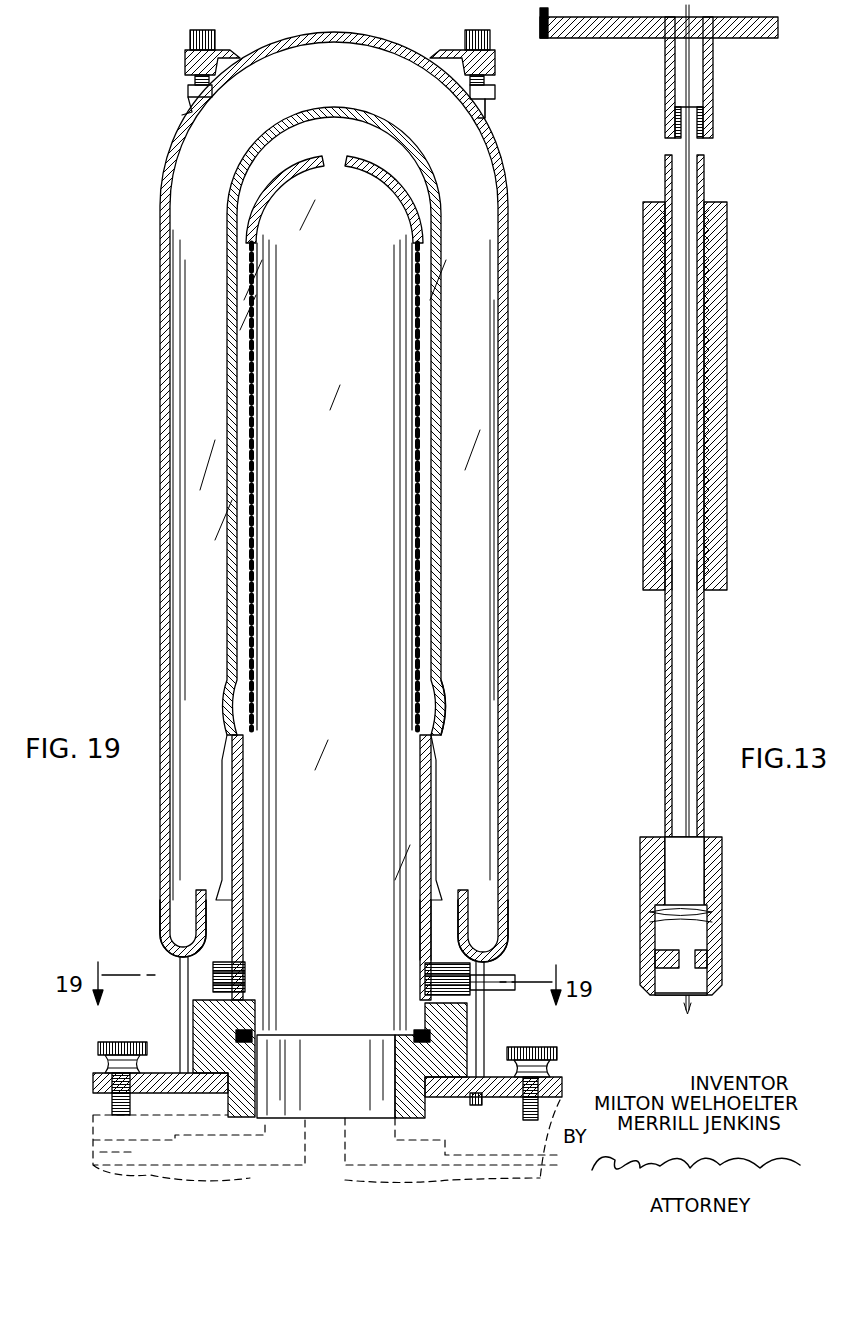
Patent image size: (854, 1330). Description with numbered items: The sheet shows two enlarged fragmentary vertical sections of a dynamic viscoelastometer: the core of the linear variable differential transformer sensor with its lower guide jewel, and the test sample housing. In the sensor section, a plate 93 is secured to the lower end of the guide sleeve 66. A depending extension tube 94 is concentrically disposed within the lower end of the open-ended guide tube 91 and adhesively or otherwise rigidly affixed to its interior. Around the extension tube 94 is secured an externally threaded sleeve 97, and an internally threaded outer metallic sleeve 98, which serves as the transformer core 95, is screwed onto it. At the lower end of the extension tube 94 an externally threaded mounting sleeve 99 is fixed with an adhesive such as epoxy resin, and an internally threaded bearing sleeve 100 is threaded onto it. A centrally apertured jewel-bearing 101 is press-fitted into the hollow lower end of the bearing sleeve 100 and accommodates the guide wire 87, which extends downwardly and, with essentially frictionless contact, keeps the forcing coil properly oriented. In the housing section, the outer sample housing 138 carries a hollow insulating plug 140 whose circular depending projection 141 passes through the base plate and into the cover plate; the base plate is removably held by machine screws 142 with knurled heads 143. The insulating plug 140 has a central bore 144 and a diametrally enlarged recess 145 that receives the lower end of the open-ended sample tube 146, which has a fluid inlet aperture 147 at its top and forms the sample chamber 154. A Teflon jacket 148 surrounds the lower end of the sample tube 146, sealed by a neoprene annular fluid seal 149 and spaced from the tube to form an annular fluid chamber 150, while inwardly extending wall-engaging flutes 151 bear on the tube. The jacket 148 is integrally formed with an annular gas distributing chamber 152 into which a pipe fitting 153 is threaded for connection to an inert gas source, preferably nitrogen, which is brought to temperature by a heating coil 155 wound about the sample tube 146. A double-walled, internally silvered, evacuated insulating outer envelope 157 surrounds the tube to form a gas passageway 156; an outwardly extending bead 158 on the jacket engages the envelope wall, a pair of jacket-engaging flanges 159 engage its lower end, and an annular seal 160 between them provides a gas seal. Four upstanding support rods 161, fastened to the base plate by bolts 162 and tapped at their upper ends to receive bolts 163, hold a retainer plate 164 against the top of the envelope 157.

In FIG. 13, the guide sleeve 66 is at (535, 28).
In FIG. 13, the guide wire 87 is at (688, 682).
In FIG. 13, the guide tube 91 is at (713, 85).
In FIG. 13, the plate 93 is at (600, 36).
In FIG. 13, the extension tube 94 is at (705, 724).
In FIG. 13, the transformer core 95 is at (727, 500).
In FIG. 13, the threaded sleeve 97 is at (708, 572).
In FIG. 13, the outer metallic sleeve 98 is at (727, 455).
In FIG. 13, the mounting sleeve 99 is at (706, 832).
In FIG. 13, the bearing sleeve 100 is at (722, 877).
In FIG. 13, the jewel-bearing 101 is at (708, 957).
In FIG. 19, the outer sample housing 138 is at (510, 491).
In FIG. 19, the insulating plug 140 is at (205, 1018).
In FIG. 19, the depending projection 141 is at (405, 1112).
In FIG. 19, the machine screws 142 is at (112, 1100).
In FIG. 19, the knurled heads 143 is at (105, 1050).
In FIG. 19, the central bore 144 is at (335, 1108).
In FIG. 19, the enlarged recess 145 is at (238, 1022).
In FIG. 19, the sample tube 146 is at (288, 892).
In FIG. 19, the fluid inlet aperture 147 is at (350, 152).
In FIG. 19, the Teflon jacket 148 is at (432, 912).
In FIG. 19, the annular fluid seal 149 is at (240, 1035).
In FIG. 19, the annular fluid chamber 150 is at (238, 972).
In FIG. 19, the wall-engaging flutes 151 is at (235, 925).
In FIG. 19, the gas distributing chamber 152 is at (440, 940).
In FIG. 19, the pipe fitting 153 is at (498, 975).
In FIG. 19, the sample chamber 154 is at (378, 722).
In FIG. 19, the heating coil 155 is at (428, 578).
In FIG. 19, the gas passageway 156 is at (424, 458).
In FIG. 19, the insulating outer envelope 157 is at (510, 372).
In FIG. 19, the bead 158 is at (437, 752).
In FIG. 19, the jacket-engaging flanges 159 is at (436, 858).
In FIG. 19, the annular seal 160 is at (432, 880).
In FIG. 19, the support rods 161 is at (492, 112).
In FIG. 19, the bolts 162 is at (474, 1108).
In FIG. 19, the bolts 163 is at (198, 35).
In FIG. 19, the retainer plate 164 is at (185, 72).